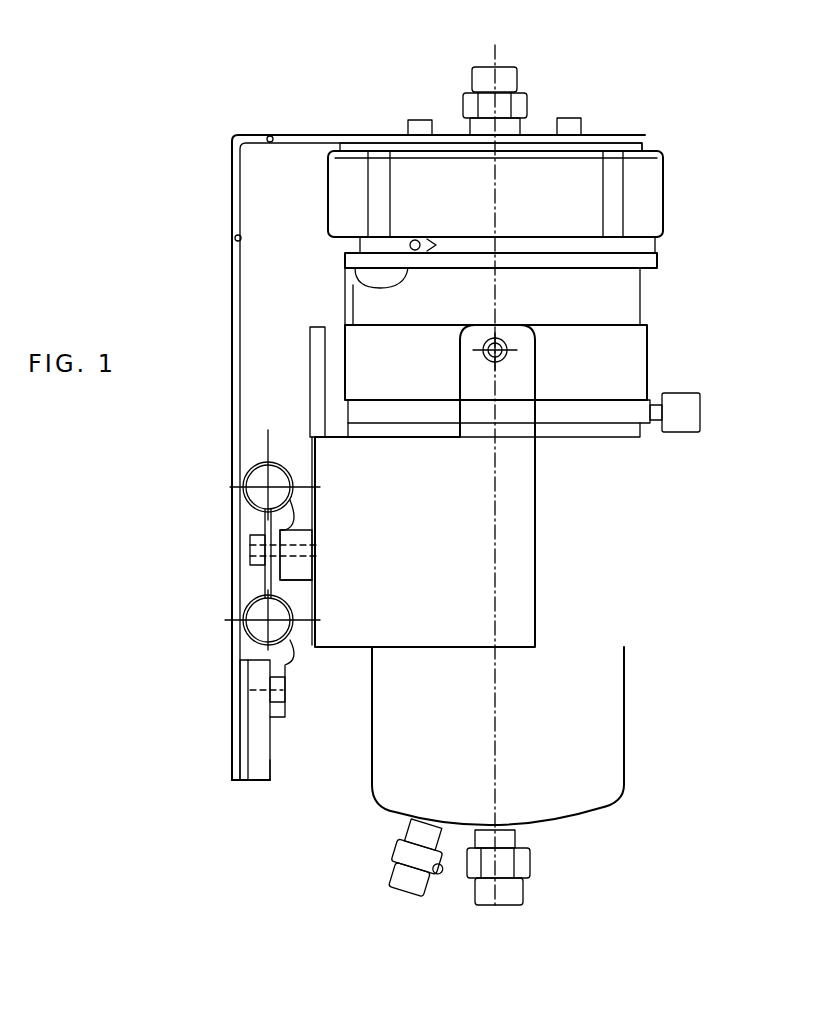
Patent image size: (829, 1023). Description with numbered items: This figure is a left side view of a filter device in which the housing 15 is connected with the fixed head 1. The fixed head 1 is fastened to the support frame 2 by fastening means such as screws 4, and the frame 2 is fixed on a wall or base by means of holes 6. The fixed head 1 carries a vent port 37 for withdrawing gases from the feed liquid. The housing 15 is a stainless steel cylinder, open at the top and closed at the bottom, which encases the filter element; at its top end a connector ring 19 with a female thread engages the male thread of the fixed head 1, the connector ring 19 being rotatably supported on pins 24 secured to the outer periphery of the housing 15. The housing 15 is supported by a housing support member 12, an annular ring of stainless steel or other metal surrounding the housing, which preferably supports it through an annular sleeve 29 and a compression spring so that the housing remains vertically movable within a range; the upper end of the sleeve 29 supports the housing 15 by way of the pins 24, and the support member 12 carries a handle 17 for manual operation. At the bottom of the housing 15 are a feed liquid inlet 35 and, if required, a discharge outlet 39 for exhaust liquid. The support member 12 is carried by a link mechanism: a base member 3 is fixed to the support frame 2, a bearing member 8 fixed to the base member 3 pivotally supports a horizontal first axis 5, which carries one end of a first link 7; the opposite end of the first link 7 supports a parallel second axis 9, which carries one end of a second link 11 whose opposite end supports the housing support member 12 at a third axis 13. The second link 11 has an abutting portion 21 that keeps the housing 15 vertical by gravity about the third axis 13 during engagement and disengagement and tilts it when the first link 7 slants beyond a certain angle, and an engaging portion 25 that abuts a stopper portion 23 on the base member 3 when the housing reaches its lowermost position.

The fixed head 1 is at (625, 140).
The support frame 2 is at (225, 178).
The base member 3 is at (240, 690).
The screws 4 is at (413, 117).
The first axis 5 is at (243, 622).
The holes 6 is at (268, 132).
The first link 7 is at (275, 583).
The bearing member 8 is at (287, 715).
The second axis 9 is at (250, 480).
The second link 11 is at (525, 590).
The housing support member 12 is at (650, 365).
The third axis 13 is at (505, 360).
The housing 15 is at (626, 713).
The handle 17 is at (700, 415).
The connector ring 19 is at (665, 203).
The abutting portion 21 is at (310, 336).
The stopper portion 23 is at (275, 762).
The pins 24 is at (355, 283).
The engaging portion 25 is at (308, 648).
The annular sleeve 29 is at (643, 302).
The feed liquid inlet 35 is at (515, 913).
The vent port 37 is at (510, 62).
The discharge outlet 39 is at (383, 882).